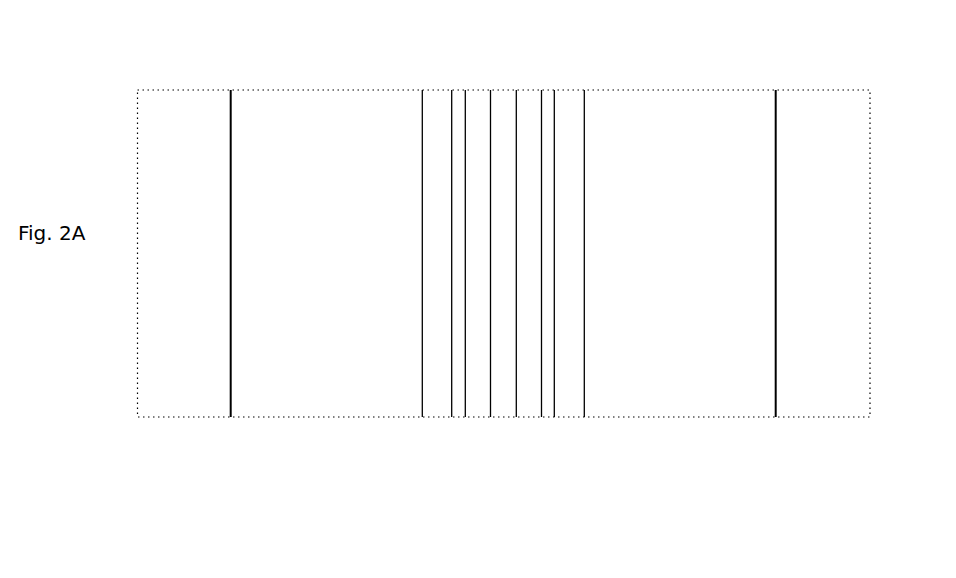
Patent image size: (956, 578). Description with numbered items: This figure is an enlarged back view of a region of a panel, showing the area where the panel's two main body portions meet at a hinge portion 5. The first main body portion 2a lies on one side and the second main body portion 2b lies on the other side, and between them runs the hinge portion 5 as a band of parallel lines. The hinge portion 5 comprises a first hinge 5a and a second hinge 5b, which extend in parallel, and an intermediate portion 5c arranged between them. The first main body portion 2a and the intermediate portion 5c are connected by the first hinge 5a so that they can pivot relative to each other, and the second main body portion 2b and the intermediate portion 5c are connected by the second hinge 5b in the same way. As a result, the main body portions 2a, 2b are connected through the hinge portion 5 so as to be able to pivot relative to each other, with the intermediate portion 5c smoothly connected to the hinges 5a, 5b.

The first main body portion 2a is at (248, 478).
The second main body portion 2b is at (716, 478).
The hinge portion 5 is at (503, 278).
The first hinge 5a is at (458, 105).
The second hinge 5b is at (547, 105).
The intermediate portion 5c is at (502, 103).